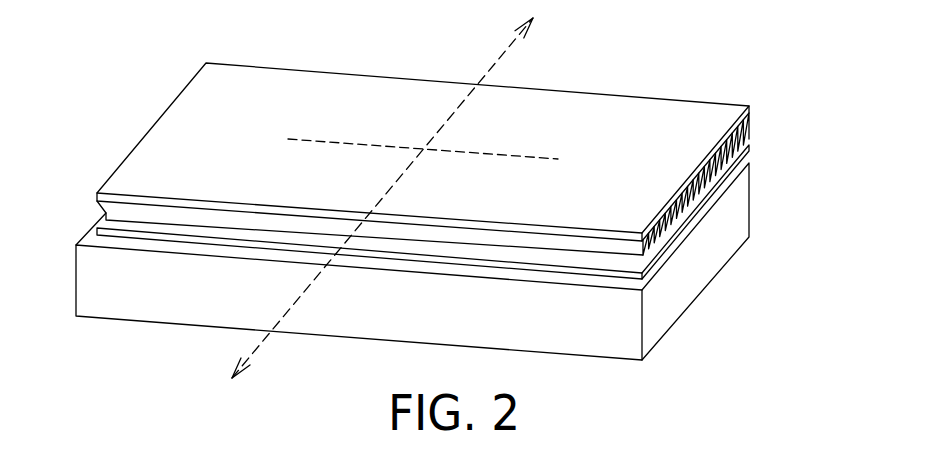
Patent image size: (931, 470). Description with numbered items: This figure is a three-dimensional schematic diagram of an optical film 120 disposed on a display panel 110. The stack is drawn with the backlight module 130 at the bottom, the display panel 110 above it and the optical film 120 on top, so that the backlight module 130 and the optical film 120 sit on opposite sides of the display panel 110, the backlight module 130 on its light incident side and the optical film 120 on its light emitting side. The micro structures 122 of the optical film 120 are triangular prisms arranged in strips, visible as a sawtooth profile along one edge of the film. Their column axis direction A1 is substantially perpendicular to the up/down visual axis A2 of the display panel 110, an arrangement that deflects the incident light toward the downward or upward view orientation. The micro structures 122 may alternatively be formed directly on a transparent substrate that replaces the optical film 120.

The display panel 110 is at (749, 152).
The optical film 120 is at (592, 117).
The micro structures 122 is at (749, 118).
The backlight module 130 is at (738, 203).
The column axis direction A1 is at (369, 142).
The up/down visual axis A2 is at (495, 63).